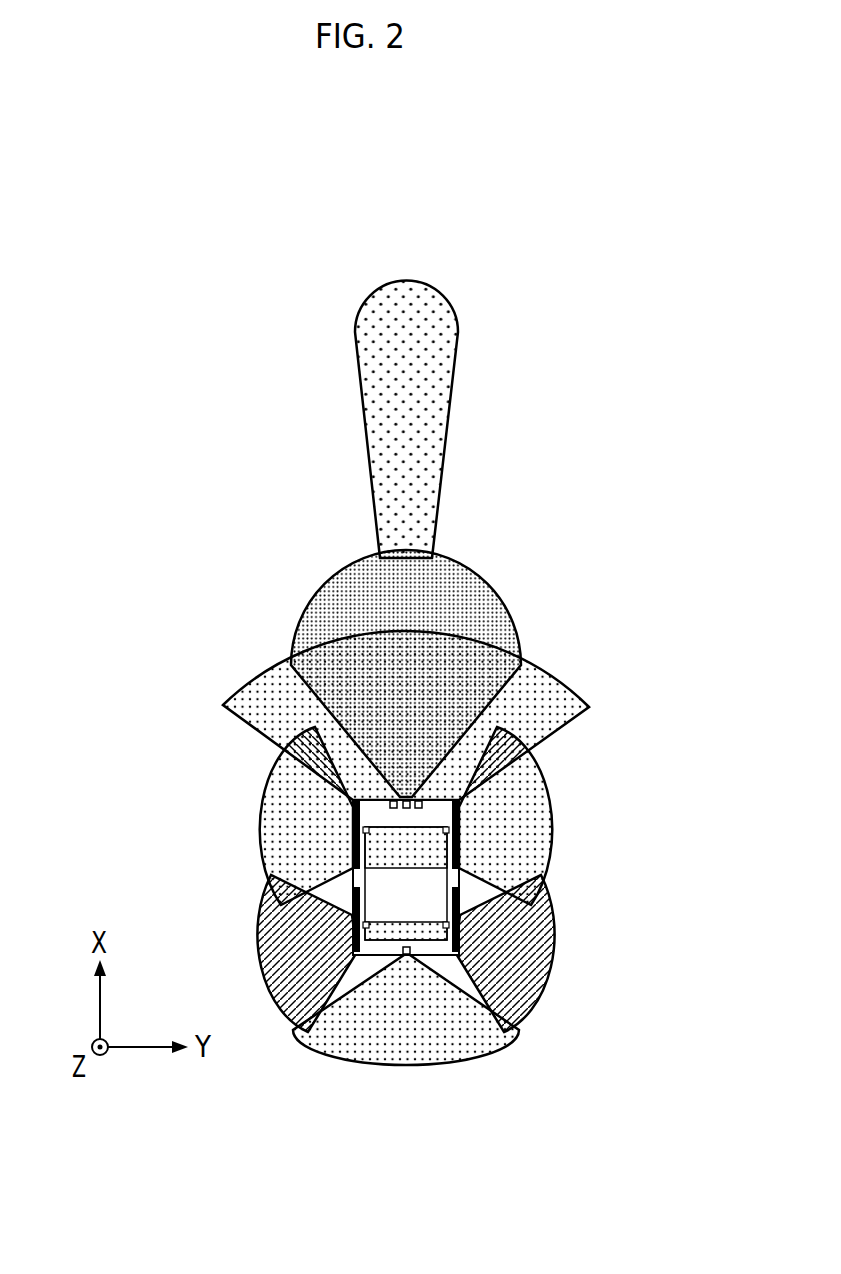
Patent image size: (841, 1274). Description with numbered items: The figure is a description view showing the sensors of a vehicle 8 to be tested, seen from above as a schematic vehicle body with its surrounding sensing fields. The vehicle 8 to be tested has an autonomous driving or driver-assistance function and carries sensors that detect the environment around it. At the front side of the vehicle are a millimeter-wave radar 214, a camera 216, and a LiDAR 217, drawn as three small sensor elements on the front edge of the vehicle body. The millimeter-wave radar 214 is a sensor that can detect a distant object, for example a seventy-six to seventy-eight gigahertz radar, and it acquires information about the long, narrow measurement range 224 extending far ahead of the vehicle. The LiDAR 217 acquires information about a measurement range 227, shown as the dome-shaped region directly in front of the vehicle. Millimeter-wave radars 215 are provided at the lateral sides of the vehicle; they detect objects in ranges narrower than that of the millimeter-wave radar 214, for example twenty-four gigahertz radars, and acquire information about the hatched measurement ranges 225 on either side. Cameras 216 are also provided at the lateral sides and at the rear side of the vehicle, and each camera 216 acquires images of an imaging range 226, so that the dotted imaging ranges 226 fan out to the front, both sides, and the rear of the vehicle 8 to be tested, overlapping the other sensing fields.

The vehicle to be tested 8 is at (181, 551).
The millimeter-wave radar 214 is at (407, 797).
The millimeter-wave radars 215 is at (354, 925).
The cameras 216 is at (419, 797).
The LiDAR 217 is at (401, 797).
The measurement range 224 is at (375, 352).
The measurement ranges 225 is at (280, 963).
The imaging ranges 226 is at (266, 712).
The measurement range 227 is at (345, 603).